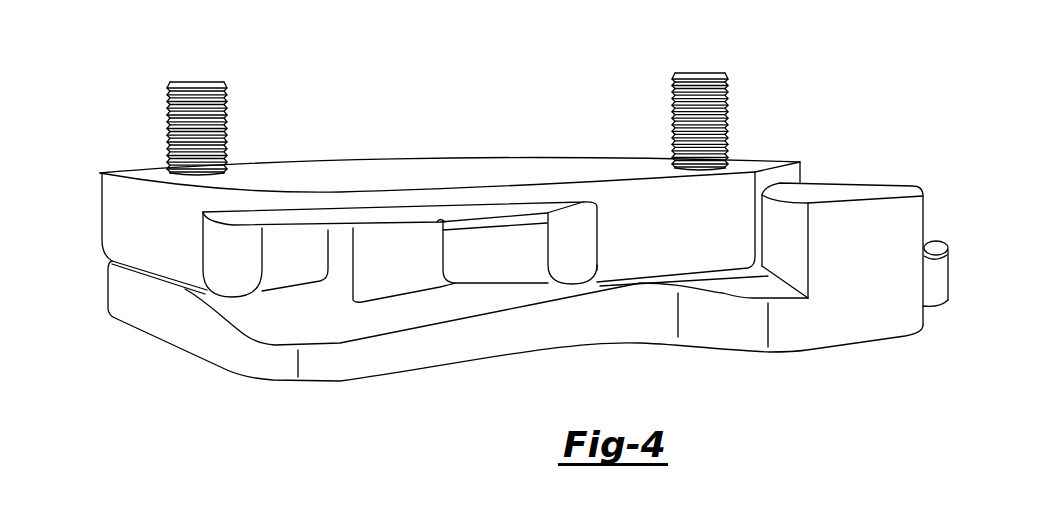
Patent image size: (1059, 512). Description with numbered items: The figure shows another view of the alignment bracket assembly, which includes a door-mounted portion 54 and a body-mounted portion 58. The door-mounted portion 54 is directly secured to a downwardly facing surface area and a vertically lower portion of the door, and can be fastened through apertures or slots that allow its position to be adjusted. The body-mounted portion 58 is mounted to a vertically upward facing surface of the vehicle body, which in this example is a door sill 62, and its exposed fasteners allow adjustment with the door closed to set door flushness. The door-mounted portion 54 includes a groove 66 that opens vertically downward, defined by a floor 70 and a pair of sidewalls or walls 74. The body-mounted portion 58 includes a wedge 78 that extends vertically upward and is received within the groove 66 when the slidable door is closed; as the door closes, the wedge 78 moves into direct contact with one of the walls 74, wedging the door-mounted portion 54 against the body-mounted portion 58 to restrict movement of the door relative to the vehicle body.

The door-mounted portion 54 is at (143, 213).
The body-mounted portion 58 is at (328, 364).
The door sill 62 is at (952, 275).
The groove 66 is at (482, 264).
The floor 70 is at (460, 222).
The walls 74 is at (290, 256).
The wedge 78 is at (388, 269).